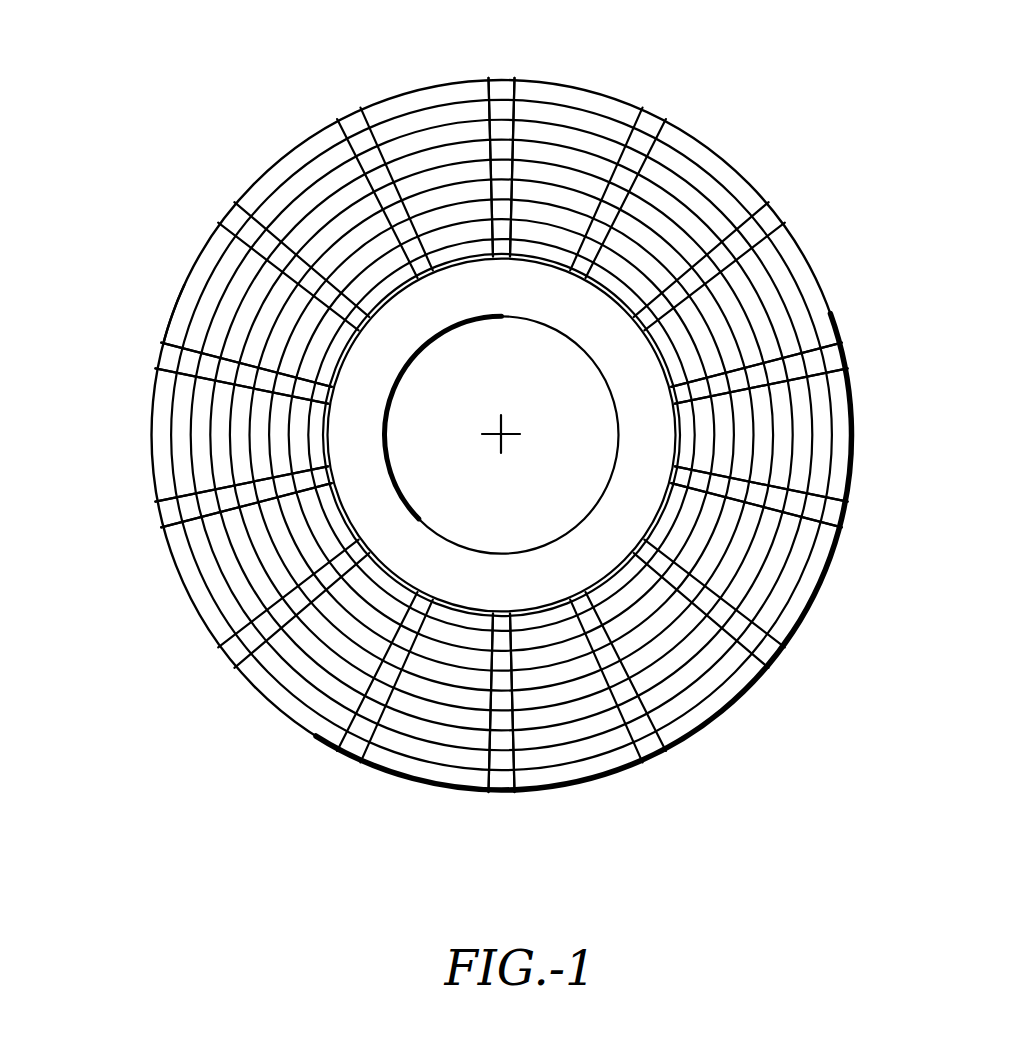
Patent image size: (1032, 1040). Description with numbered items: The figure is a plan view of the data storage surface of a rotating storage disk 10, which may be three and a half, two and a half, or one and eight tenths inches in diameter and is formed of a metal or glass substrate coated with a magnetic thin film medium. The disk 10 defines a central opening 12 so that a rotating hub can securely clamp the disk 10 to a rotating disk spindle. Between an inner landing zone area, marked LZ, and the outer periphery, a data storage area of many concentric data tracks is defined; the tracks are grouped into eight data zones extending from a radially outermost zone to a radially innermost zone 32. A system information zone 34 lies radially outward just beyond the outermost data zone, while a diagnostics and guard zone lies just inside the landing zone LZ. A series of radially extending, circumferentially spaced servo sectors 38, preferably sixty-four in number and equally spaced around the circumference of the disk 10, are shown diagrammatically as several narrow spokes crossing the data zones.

The rotating storage disk 10 is at (130, 704).
The central opening 12 is at (482, 490).
The radially innermost data zone 32 is at (693, 733).
The system information zone 34 is at (190, 583).
The servo sectors 38 is at (353, 120).
The landing zone LZ is at (488, 585).